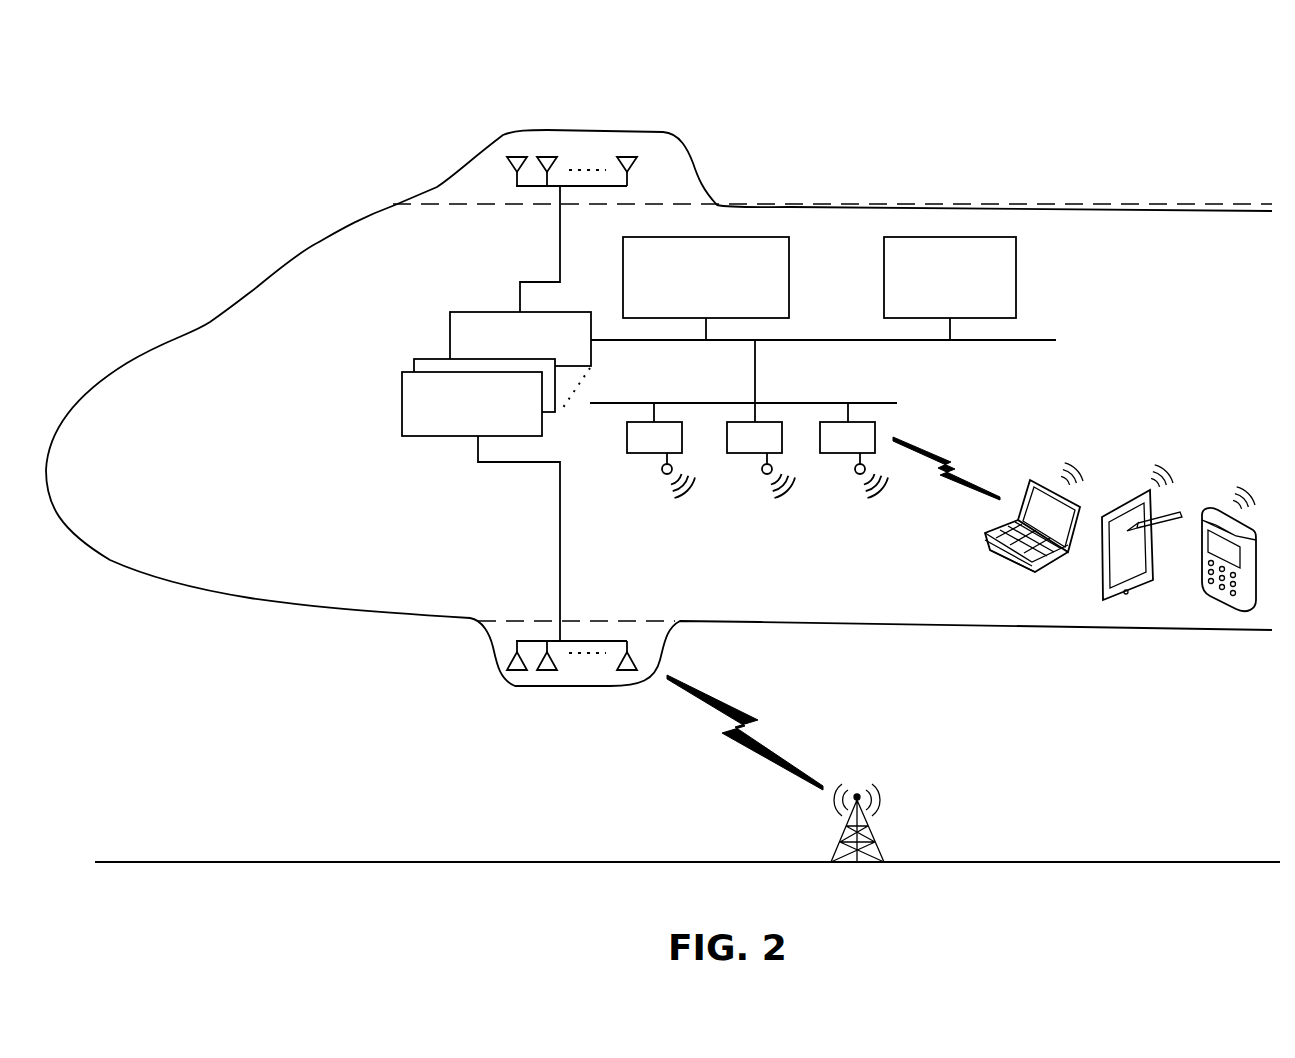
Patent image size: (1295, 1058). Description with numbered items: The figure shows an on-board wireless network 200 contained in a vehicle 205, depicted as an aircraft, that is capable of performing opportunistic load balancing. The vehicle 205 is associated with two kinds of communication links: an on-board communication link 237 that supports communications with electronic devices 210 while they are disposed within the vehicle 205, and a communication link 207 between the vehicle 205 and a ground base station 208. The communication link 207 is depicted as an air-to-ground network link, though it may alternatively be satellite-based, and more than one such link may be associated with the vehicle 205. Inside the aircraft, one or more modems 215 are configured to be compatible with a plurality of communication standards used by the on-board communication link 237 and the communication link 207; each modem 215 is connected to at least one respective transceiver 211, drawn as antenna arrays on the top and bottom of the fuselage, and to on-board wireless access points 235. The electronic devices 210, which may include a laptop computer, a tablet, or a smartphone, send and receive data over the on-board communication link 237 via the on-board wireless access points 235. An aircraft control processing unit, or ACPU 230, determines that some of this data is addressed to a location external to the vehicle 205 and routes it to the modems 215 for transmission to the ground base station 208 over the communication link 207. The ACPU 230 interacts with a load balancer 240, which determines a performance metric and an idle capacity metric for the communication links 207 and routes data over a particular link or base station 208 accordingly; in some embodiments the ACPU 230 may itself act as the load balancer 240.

The on-board wireless network 200 is at (324, 86).
The vehicle 205 is at (285, 607).
The transceiver 211 is at (645, 130).
The modems 215 is at (452, 358).
The load balancer 240 is at (790, 272).
The aircraft control processing unit (ACPU) 230 is at (1018, 272).
The on-board wireless access point 235 is at (815, 401).
The on-board communication link 237 is at (932, 450).
The electronic devices 210 is at (1050, 570).
The communication link 207 is at (747, 717).
The ground base station 208 is at (873, 787).